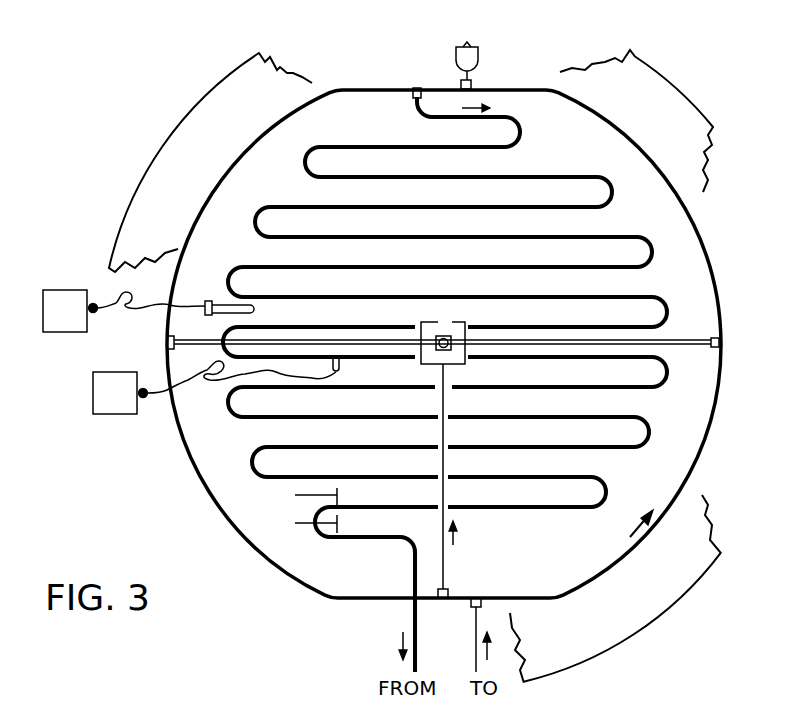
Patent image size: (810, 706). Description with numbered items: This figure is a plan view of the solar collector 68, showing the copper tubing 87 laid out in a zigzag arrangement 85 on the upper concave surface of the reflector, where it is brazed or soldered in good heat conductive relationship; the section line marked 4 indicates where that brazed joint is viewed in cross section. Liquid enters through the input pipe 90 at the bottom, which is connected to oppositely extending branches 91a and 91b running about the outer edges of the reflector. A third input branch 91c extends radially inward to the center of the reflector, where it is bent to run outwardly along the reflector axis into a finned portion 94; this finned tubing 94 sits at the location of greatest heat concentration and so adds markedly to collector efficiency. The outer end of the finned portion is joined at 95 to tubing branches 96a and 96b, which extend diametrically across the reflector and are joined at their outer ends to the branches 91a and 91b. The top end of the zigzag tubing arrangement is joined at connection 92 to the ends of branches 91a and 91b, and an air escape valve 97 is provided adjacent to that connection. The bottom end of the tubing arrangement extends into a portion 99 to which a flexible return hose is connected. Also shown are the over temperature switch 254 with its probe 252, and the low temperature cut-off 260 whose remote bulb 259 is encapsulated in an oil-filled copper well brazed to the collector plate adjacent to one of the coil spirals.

The collector 68 is at (686, 86).
The zigzag arrangement 85 is at (600, 232).
The tubing 87 is at (550, 176).
The connection 92 is at (412, 95).
The air escape valve 97 is at (470, 63).
The joint 95 is at (443, 335).
The finned portion 94 is at (463, 352).
The tubing branch 96a is at (678, 341).
The tubing branch 96b is at (172, 362).
The input branch 91a is at (684, 483).
The input branch 91b is at (213, 487).
The third input branch 91c is at (445, 553).
The probe 252 is at (212, 302).
The over temperature switch (OTS) 254 is at (65, 290).
The remote bulb 259 is at (336, 359).
The low temperature cut-off 260 is at (100, 393).
The outlet portion 99 is at (412, 614).
The input pipe 90 is at (477, 642).
The section line 4- 4 is at (307, 511).